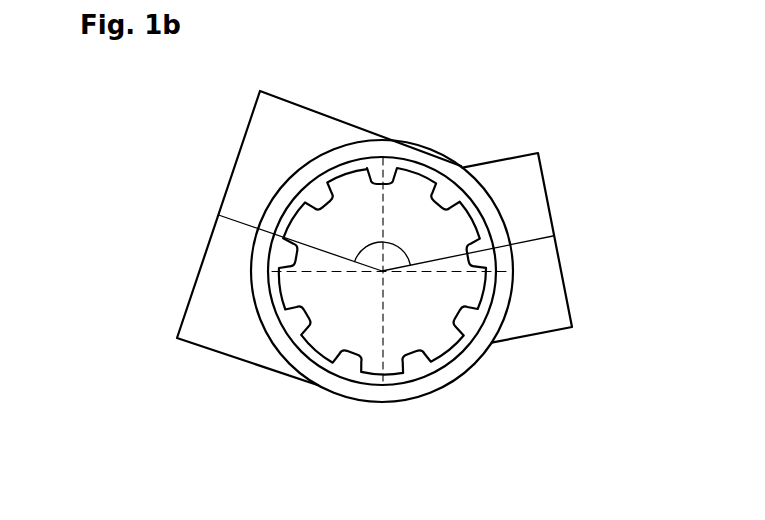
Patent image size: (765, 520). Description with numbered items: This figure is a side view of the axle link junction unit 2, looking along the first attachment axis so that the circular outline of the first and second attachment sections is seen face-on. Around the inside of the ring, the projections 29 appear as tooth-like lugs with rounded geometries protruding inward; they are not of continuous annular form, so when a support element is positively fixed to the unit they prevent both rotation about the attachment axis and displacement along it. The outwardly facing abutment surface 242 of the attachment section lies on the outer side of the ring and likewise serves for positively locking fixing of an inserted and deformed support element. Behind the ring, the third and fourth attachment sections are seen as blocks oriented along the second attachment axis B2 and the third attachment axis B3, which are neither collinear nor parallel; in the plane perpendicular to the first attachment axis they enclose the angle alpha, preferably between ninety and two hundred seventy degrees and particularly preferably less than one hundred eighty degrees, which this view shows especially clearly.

The axle link junction unit 2 is at (387, 100).
The outwardly facing abutment surface 242 is at (447, 188).
The projections 29 is at (465, 330).
The second attachment axis B2 is at (246, 226).
The third attachment axis B3 is at (538, 240).
The angle alpha is at (400, 248).